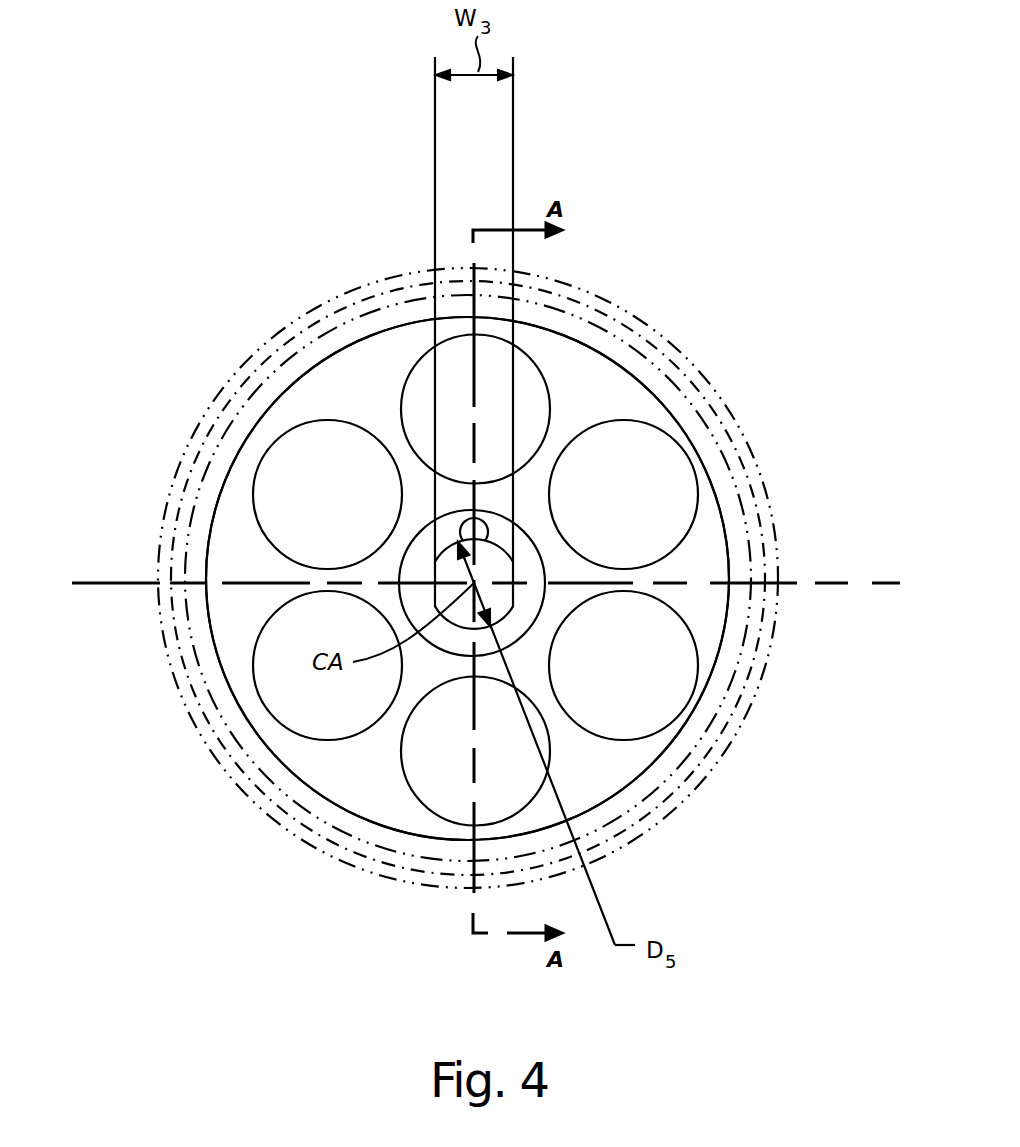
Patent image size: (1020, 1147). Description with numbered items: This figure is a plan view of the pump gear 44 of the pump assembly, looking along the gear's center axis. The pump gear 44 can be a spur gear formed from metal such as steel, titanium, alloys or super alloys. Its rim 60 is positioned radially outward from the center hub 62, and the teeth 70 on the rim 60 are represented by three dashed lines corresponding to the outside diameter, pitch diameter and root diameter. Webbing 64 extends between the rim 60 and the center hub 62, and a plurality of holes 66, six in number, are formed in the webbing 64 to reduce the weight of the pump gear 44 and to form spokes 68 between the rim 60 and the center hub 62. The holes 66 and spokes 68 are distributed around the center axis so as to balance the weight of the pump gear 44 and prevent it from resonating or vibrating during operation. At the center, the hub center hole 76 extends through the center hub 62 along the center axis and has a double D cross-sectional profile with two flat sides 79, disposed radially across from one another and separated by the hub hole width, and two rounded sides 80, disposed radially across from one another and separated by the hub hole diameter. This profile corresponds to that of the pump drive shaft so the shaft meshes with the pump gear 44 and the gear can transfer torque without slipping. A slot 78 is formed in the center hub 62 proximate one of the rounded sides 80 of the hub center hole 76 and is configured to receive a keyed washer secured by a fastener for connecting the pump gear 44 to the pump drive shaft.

The pump gear 44 is at (180, 175).
The rim 60 is at (358, 345).
The center hub 62 is at (528, 600).
The webbing 64 is at (233, 553).
The plurality of holes 66 is at (695, 633).
The spokes 68 is at (557, 727).
The teeth 70 is at (238, 390).
The hub center hole 76 is at (500, 568).
The slot 78 is at (492, 515).
The flat sides 79 is at (433, 558).
The rounded sides 80 is at (458, 628).